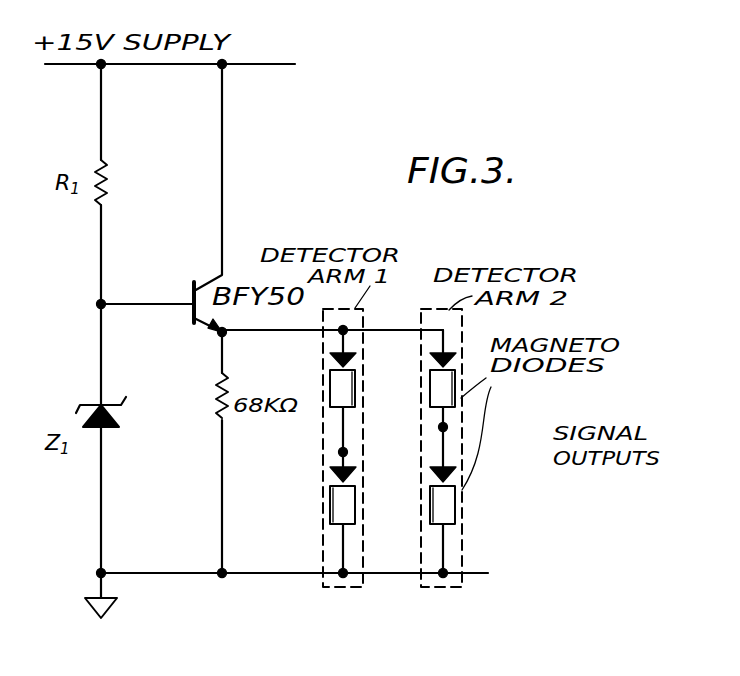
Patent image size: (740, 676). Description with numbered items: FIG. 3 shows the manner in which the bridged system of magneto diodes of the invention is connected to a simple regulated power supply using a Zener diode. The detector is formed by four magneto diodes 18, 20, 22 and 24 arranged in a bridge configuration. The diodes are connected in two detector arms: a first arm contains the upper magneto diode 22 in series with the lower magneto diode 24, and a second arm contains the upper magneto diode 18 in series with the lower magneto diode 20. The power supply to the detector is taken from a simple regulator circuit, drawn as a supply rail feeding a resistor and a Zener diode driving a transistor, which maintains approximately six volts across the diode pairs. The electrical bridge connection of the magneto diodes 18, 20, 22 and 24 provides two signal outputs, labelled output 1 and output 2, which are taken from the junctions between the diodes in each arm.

The magneto diode 18 is at (440, 390).
The magneto diode 20 is at (440, 506).
The magneto diode 22 is at (342, 380).
The magneto diode 24 is at (338, 505).
The signal output 1 is at (443, 427).
The signal output 2 is at (343, 452).